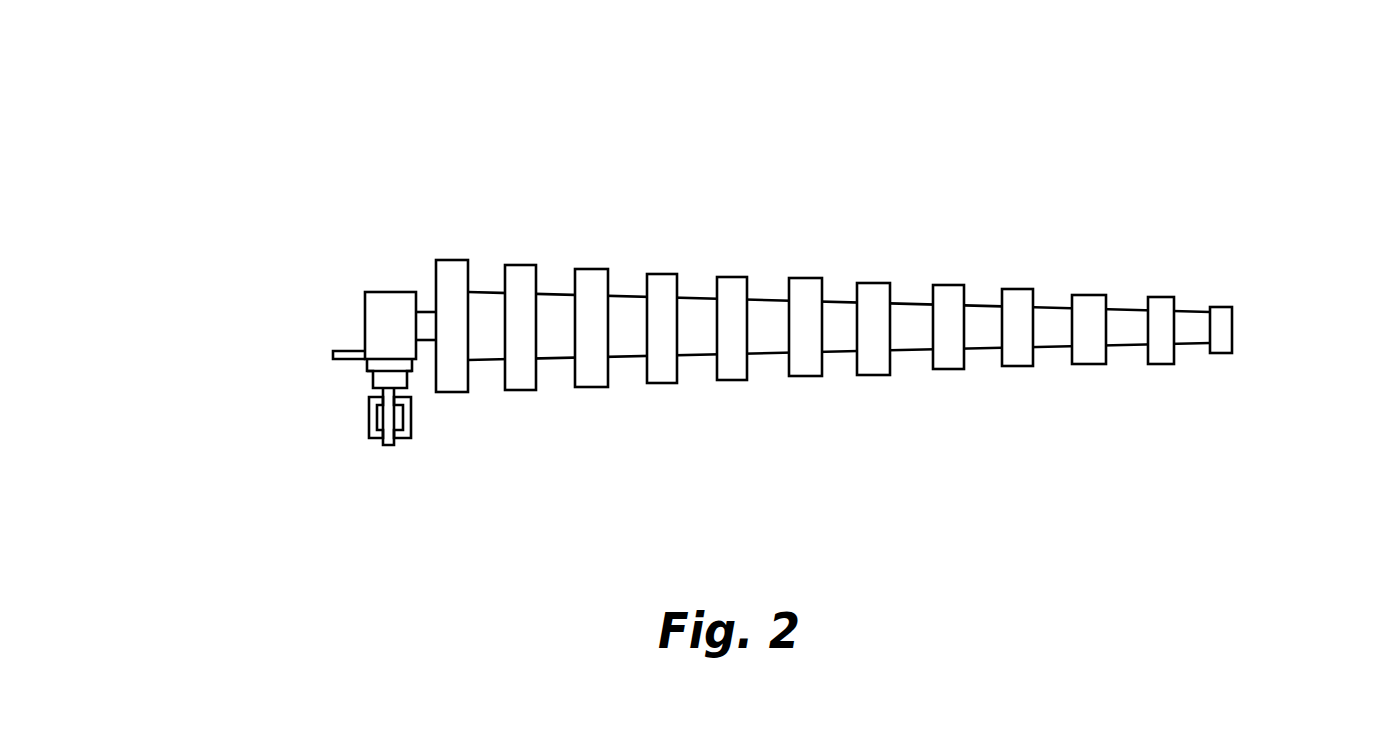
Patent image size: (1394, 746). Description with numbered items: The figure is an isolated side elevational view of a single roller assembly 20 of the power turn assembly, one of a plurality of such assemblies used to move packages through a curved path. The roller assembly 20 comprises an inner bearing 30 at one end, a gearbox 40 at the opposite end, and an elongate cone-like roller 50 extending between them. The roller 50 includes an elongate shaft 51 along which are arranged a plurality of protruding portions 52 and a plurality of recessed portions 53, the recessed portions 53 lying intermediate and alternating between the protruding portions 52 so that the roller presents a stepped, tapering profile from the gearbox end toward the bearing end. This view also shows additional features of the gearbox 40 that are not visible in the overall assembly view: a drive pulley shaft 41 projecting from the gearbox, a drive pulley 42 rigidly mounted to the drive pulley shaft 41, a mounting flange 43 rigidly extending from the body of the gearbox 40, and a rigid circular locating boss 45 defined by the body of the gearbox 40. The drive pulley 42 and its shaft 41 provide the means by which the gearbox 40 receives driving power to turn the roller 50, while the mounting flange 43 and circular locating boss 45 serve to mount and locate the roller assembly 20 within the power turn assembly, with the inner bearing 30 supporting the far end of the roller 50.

The roller assembly 20 is at (1077, 157).
The inner bearing 30 is at (1225, 317).
The gearbox 40 is at (384, 305).
The drive pulley shaft 41 is at (387, 445).
The drive pulley 42 is at (379, 418).
The mounting flange 43 is at (355, 350).
The circular locating boss 45 is at (372, 363).
The roller 50 is at (1135, 258).
The shaft 51 is at (426, 335).
The protruding portions 52 is at (983, 416).
The recessed portions 53 is at (805, 388).